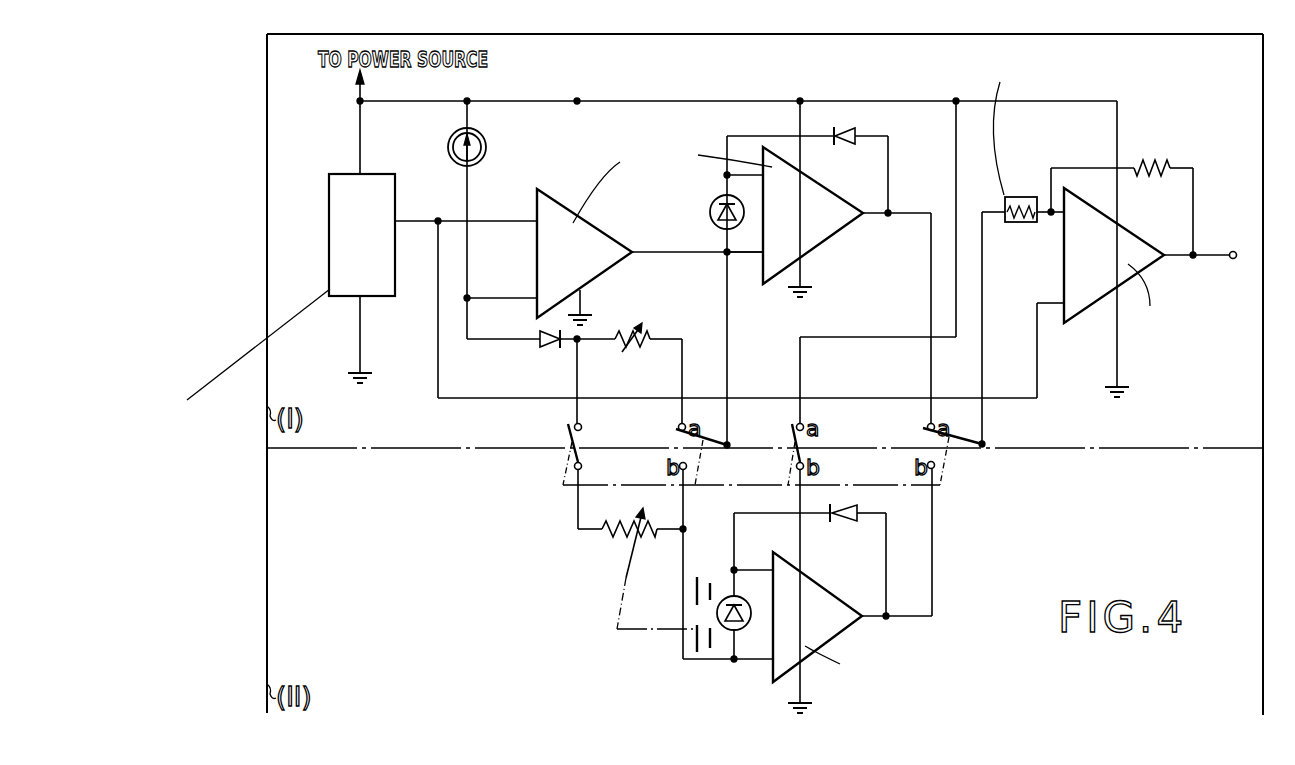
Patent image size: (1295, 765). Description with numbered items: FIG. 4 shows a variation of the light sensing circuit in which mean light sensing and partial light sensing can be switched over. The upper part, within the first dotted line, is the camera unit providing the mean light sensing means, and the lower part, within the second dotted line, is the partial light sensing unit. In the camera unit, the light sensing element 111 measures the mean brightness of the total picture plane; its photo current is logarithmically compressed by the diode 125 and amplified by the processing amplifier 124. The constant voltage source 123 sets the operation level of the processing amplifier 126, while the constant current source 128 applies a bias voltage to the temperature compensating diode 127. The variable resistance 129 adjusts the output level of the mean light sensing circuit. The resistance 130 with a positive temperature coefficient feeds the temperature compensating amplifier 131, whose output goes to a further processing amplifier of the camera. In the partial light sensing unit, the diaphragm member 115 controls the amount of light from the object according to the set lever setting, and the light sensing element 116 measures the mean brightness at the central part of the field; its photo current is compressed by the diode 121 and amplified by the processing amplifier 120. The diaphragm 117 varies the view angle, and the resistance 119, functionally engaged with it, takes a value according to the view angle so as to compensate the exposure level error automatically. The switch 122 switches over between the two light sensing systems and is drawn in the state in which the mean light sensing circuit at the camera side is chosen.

The light sensing element 111 is at (708, 213).
The diaphragm member 115 is at (701, 577).
The light sensing element 116 is at (742, 632).
The diaphragm 117 is at (706, 654).
The resistance 119 is at (614, 540).
The processing amplifier 120 is at (872, 591).
The diode 121 is at (838, 522).
The switch 122 is at (573, 461).
The constant voltage source 123 is at (298, 289).
The processing amplifier 124 is at (829, 262).
The diode 125 is at (838, 144).
The processing amplifier 126 is at (619, 215).
The diode 127 is at (553, 348).
The constant current source 128 is at (486, 149).
The variable resistance 129 is at (638, 350).
The resistance with positive temperature coefficient 130 is at (1022, 223).
The temperature compensating amplifier 131 is at (1145, 249).